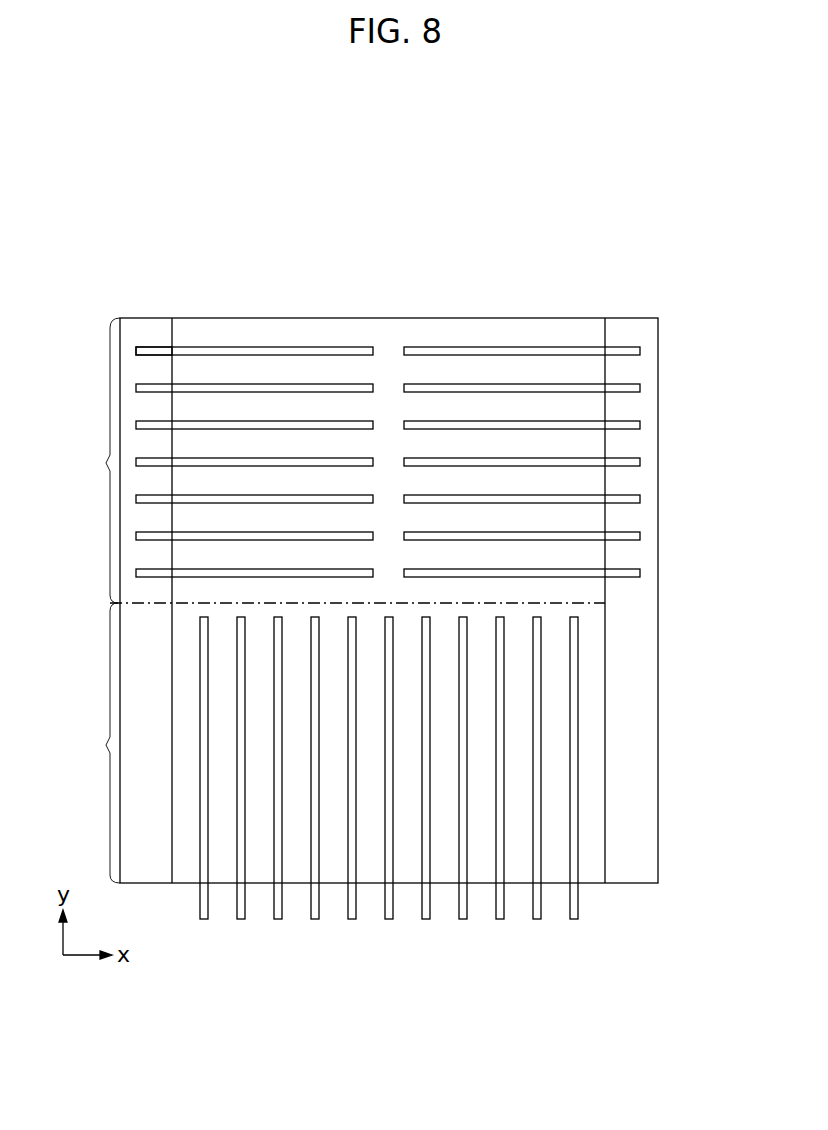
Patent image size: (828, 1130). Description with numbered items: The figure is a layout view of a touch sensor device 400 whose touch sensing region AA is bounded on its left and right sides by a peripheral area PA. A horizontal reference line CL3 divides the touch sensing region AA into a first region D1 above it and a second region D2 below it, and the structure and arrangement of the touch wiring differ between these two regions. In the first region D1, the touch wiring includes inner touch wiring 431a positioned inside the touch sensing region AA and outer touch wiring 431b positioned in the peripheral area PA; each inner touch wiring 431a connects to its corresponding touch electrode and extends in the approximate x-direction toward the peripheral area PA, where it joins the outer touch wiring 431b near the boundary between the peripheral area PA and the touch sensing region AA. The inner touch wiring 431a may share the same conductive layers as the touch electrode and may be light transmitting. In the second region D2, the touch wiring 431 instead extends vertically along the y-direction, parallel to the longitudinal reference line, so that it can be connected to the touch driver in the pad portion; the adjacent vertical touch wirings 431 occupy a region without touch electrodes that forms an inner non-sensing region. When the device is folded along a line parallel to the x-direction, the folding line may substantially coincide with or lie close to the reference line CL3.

The touch sensor device 400 is at (386, 266).
The touch wiring 431 is at (578, 745).
The inner touch wiring 431a is at (273, 345).
The outer touch wiring 431b is at (150, 346).
The peripheral area PA is at (133, 337).
The touch sensing region AA is at (525, 338).
The reference line CL3 is at (110, 603).
The first region D1 is at (99, 460).
The second region D2 is at (98, 743).